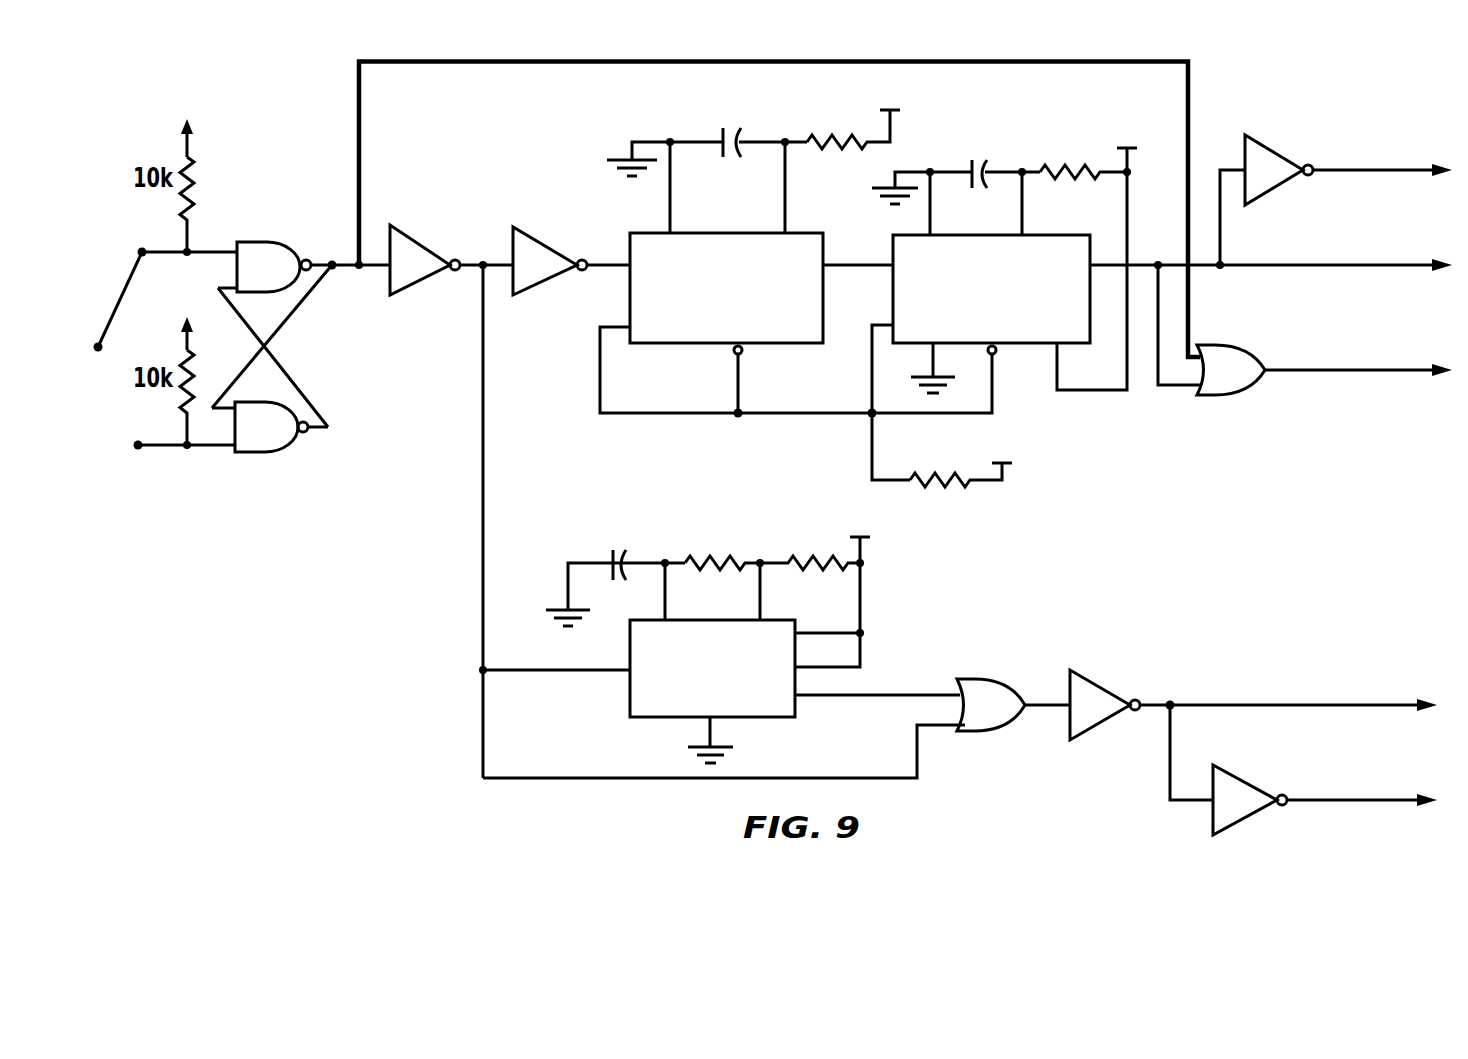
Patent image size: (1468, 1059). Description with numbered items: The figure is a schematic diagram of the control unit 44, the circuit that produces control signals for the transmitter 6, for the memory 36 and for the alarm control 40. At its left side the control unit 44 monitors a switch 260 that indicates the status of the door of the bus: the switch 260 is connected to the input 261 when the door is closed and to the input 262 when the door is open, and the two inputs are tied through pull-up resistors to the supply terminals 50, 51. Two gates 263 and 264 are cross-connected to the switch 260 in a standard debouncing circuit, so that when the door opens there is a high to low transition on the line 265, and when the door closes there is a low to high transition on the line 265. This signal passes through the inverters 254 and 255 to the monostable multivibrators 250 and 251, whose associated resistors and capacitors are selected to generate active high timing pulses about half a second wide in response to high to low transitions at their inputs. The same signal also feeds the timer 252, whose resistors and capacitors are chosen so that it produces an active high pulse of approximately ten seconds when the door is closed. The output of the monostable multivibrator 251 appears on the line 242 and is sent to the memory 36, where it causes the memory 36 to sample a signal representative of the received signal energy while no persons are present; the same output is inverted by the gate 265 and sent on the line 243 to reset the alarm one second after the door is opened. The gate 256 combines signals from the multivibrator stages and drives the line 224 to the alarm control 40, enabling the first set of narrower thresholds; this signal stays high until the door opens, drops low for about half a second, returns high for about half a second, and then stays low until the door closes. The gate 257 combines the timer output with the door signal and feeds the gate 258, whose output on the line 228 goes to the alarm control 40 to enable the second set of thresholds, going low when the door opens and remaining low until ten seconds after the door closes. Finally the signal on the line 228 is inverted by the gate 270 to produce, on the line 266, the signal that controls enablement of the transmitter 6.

The control unit 44 is at (568, 810).
The supply terminal 50 is at (188, 118).
The supply terminal 51 is at (186, 317).
The switch 260 is at (101, 347).
The input 261 is at (167, 281).
The input 262 is at (165, 465).
The gate 263 is at (262, 242).
The gate 264 is at (268, 453).
The line 265 is at (348, 270).
The inverter LS04 254 is at (410, 233).
The inverter LS04 255 is at (528, 235).
The monostable multivibrator 250 is at (675, 345).
The monostable multivibrator 251 is at (1035, 346).
The timer 252 is at (630, 688).
The gate 256 is at (1215, 346).
The OR gate LS32 257 is at (977, 680).
The gate 258 is at (1098, 673).
The gate 270 is at (1242, 772).
The line 242 is at (1288, 262).
The line 243 is at (1375, 168).
The line 224 is at (1322, 368).
The line 228 is at (1210, 702).
The output line to transmitter 266 is at (1305, 797).
The memory 36 is at (1378, 306).
The alarm control 40 is at (1388, 492).
The transmitter 6 is at (1368, 853).